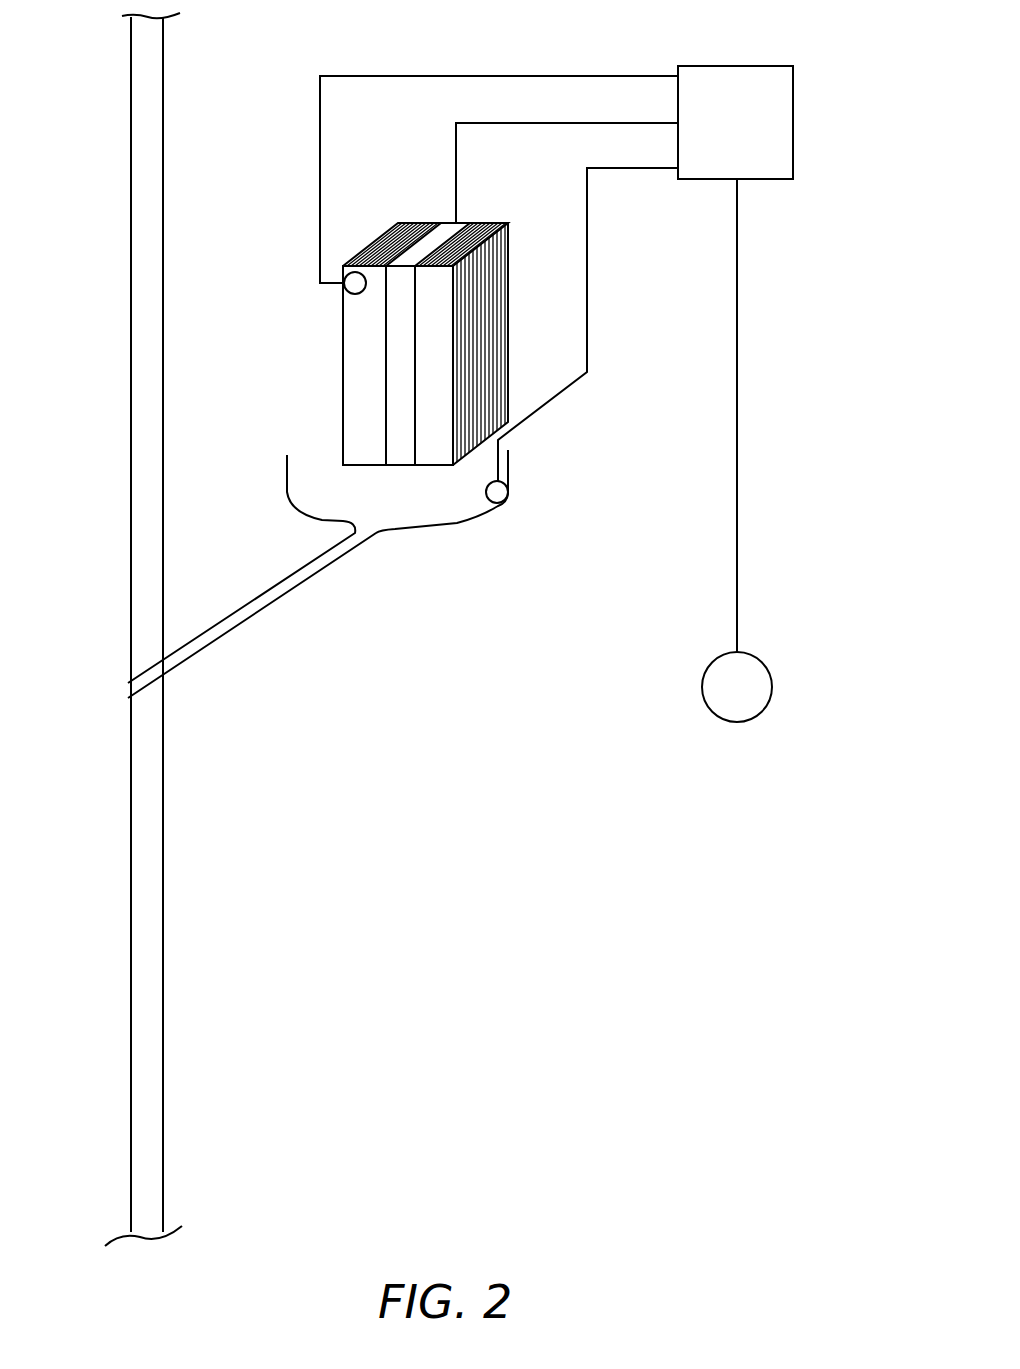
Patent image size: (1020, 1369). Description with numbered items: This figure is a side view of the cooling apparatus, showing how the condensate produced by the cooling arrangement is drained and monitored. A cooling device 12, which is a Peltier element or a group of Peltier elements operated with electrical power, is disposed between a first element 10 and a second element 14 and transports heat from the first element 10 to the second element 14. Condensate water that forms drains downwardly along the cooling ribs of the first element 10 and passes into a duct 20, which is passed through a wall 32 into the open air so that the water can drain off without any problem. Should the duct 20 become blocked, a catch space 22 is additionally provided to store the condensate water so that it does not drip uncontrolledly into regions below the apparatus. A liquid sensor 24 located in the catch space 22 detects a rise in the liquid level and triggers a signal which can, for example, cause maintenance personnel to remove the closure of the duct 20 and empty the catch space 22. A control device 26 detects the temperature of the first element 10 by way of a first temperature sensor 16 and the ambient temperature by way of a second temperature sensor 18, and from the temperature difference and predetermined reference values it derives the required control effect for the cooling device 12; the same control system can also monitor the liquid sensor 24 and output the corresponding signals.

The first element 10 is at (358, 386).
The cooling device 12 is at (441, 232).
The second element 14 is at (436, 452).
The first temperature sensor 16 is at (346, 291).
The second temperature sensor 18 is at (752, 704).
The duct 20 is at (218, 614).
The catch space 22 is at (518, 456).
The liquid sensor 24 is at (490, 527).
The control device 26 is at (757, 152).
The wall 32 is at (157, 197).